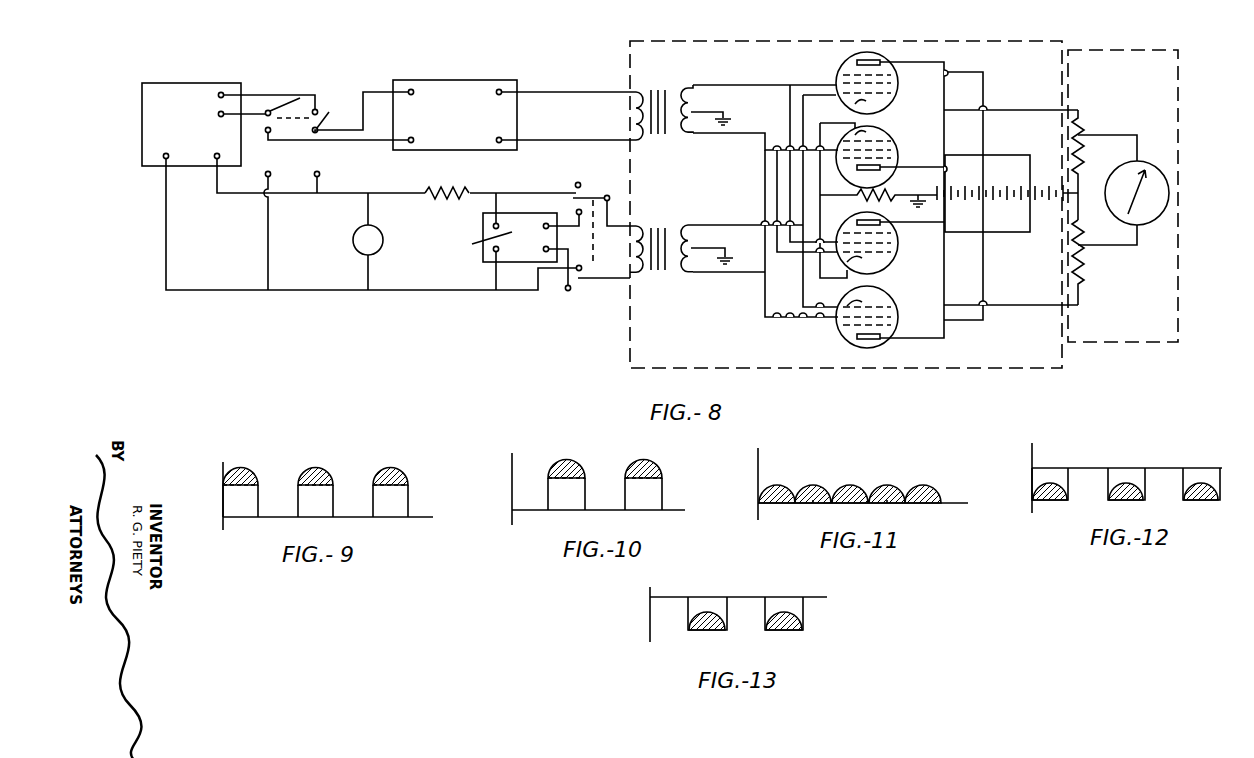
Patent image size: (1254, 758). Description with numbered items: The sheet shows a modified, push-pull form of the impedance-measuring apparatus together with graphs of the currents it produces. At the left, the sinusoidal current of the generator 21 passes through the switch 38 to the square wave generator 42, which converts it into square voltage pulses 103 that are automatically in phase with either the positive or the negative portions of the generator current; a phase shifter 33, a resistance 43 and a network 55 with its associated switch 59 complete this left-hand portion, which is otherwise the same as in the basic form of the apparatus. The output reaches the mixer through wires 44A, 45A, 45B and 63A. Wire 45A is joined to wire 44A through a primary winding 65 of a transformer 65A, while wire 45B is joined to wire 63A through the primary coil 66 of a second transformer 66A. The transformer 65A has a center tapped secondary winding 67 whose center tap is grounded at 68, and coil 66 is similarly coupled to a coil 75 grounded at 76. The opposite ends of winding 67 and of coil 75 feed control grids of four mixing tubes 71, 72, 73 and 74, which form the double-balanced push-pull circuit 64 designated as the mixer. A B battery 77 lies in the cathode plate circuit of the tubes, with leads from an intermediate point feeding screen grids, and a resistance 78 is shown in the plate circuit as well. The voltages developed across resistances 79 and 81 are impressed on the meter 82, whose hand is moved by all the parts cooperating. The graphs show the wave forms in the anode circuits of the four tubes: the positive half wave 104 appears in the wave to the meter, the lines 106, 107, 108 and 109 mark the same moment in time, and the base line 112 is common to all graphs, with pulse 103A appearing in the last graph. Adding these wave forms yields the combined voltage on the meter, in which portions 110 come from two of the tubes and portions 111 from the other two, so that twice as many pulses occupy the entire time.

In FIG. 8, the sinusoidal generator 21 is at (373, 239).
In FIG. 8, the 90 degree phase shifter 33 is at (192, 91).
In FIG. 8, the switch 38 is at (297, 99).
In FIG. 8, the square wave generator 42 is at (457, 86).
In FIG. 8, the resistor 43 is at (442, 197).
In FIG. 8, the wire 44A is at (557, 91).
In FIG. 8, the wire 45A is at (558, 138).
In FIG. 8, the wire 45B is at (613, 205).
In FIG. 8, the network 55 is at (508, 220).
In FIG. 8, the switch 59 is at (595, 260).
In FIG. 8, the wire 63A is at (617, 278).
In FIG. 8, the double-balanced push-pull circuit 64 is at (626, 345).
In FIG. 8, the primary winding 65 is at (640, 89).
In FIG. 8, the transformer 65A is at (663, 137).
In FIG. 8, the coil 66 is at (648, 276).
In FIG. 8, the second transformer 66A is at (663, 218).
In FIG. 8, the center tapped secondary winding 67 is at (692, 103).
In FIG. 8, the ground connection 68 is at (729, 120).
In FIG. 8, the tube 71 is at (846, 60).
In FIG. 8, the tube 72 is at (893, 146).
In FIG. 8, the tube 73 is at (895, 257).
In FIG. 8, the tube 74 is at (842, 333).
In FIG. 8, the coil 75 is at (695, 247).
In FIG. 8, the ground 76 is at (730, 257).
In FIG. 8, the B battery 77 is at (1003, 197).
In FIG. 8, the resistor 78 is at (998, 233).
In FIG. 8, the resistance 79 is at (1088, 147).
In FIG. 8, the resistance 81 is at (1090, 271).
In FIG. 8, the meter 82 is at (1165, 203).
In FIG. 9, the square voltage pulses 103 is at (260, 505).
In FIG. 12, the square voltage pulses 103 is at (1070, 489).
In FIG. 13, the pulse 103A is at (805, 613).
In FIG. 9, the positive half wave 104 is at (392, 468).
In FIG. 9, the line 106 is at (227, 462).
In FIG. 11, the line 106 is at (762, 460).
In FIG. 10, the line 107 is at (515, 462).
In FIG. 12, the line 108 is at (1035, 449).
In FIG. 13, the line 109 is at (652, 588).
In FIG. 11, the portions 110 is at (921, 486).
In FIG. 11, the portions 111 is at (886, 489).
In FIG. 9, the base line 112 is at (418, 517).
In FIG. 10, the base line 112 is at (676, 510).
In FIG. 11, the base line 112 is at (956, 503).
In FIG. 12, the base line 112 is at (1156, 468).
In FIG. 13, the base line 112 is at (741, 597).